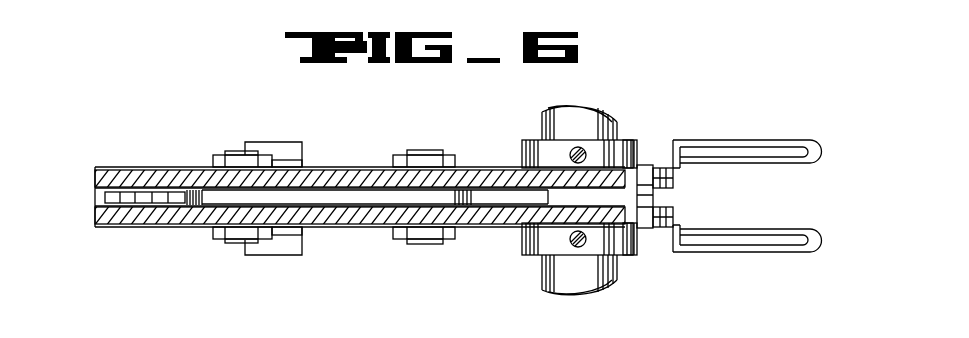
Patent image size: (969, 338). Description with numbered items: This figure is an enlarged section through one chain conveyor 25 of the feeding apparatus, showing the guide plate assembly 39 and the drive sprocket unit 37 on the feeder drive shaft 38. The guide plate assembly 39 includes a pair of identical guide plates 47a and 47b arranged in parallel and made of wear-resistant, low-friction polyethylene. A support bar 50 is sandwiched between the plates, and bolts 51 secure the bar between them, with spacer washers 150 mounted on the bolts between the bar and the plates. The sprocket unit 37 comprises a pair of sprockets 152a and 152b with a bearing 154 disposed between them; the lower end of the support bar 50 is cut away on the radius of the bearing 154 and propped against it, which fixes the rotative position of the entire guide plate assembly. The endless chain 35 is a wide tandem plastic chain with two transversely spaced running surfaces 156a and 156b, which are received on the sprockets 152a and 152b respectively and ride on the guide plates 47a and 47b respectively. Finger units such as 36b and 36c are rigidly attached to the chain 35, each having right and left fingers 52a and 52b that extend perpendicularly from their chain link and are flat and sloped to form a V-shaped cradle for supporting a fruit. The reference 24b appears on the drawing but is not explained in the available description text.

The chain conveyor 25 is at (111, 164).
The guide plate assembly 39 is at (88, 178).
The bolts 51 is at (236, 154).
The support bar 50 is at (287, 197).
The guide plate 47a is at (348, 175).
The guide plate 47b is at (350, 217).
The spacer washers 150 is at (213, 185).
The finger unit 36b is at (272, 258).
The bearing 154 is at (557, 203).
The feeder drive shaft 38 is at (567, 108).
The running surface 156a is at (633, 143).
The running surface 156b is at (623, 257).
The endless chain 35 is at (675, 188).
The drive sprocket unit 37 is at (685, 212).
The sprocket 152a is at (653, 167).
The sprocket 152b is at (662, 233).
The finger unit 36c is at (813, 132).
The right finger 52a is at (808, 163).
The left finger 52b is at (810, 228).
The linkage assembly 24b is at (720, 90).